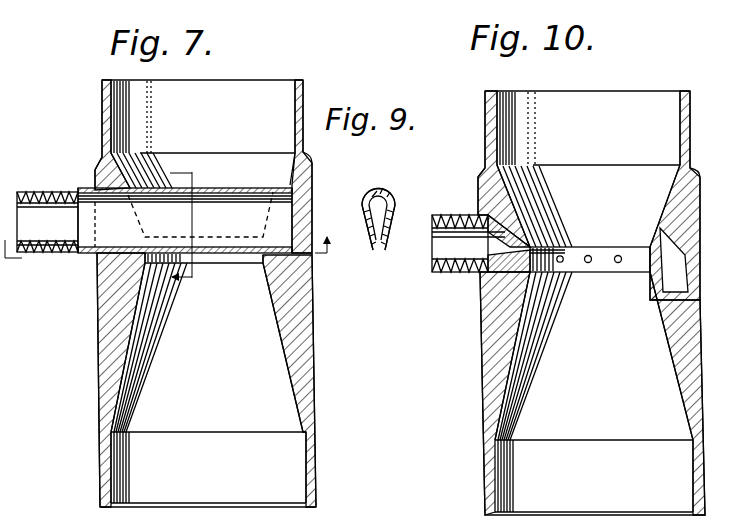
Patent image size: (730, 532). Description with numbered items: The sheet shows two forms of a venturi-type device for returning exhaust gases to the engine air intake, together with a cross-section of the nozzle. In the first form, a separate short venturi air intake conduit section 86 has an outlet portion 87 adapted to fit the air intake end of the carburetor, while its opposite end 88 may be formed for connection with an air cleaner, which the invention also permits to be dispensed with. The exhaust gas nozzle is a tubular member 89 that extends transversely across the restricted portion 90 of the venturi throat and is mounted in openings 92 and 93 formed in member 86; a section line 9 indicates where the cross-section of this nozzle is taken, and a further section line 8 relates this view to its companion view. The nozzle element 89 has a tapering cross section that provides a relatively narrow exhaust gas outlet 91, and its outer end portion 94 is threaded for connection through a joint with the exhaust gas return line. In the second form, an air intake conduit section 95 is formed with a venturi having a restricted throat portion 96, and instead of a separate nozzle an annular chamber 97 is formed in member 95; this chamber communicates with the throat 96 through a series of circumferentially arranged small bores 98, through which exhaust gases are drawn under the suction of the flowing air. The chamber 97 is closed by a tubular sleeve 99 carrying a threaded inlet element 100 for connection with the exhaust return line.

In FIG. 7, the venturi air intake conduit section 86 is at (306, 360).
In FIG. 7, the outlet portion 87 is at (314, 489).
In FIG. 7, the opposite end 88 is at (305, 82).
In FIG. 7, the tubular member 89 is at (263, 180).
In FIG. 9, the tubular member 89 is at (390, 172).
In FIG. 7, the restricted portion 90 is at (246, 258).
In FIG. 9, the exhaust gas outlet 91 is at (378, 252).
In FIG. 7, the opening 92 is at (287, 253).
In FIG. 7, the opening 93 is at (100, 258).
In FIG. 7, the outer end portion 94 is at (52, 181).
In FIG. 10, the air intake conduit section 95 is at (687, 385).
In FIG. 10, the restricted throat portion 96 is at (598, 266).
In FIG. 10, the annular chamber 97 is at (687, 250).
In FIG. 10, the small bores 98 is at (653, 253).
In FIG. 10, the tubular sleeve 99 is at (680, 168).
In FIG. 10, the threaded inlet element 100 is at (463, 206).
In FIG. 7, the section line 8- 8 is at (165, 237).
In FIG. 7, the section line 9- 9 is at (191, 227).